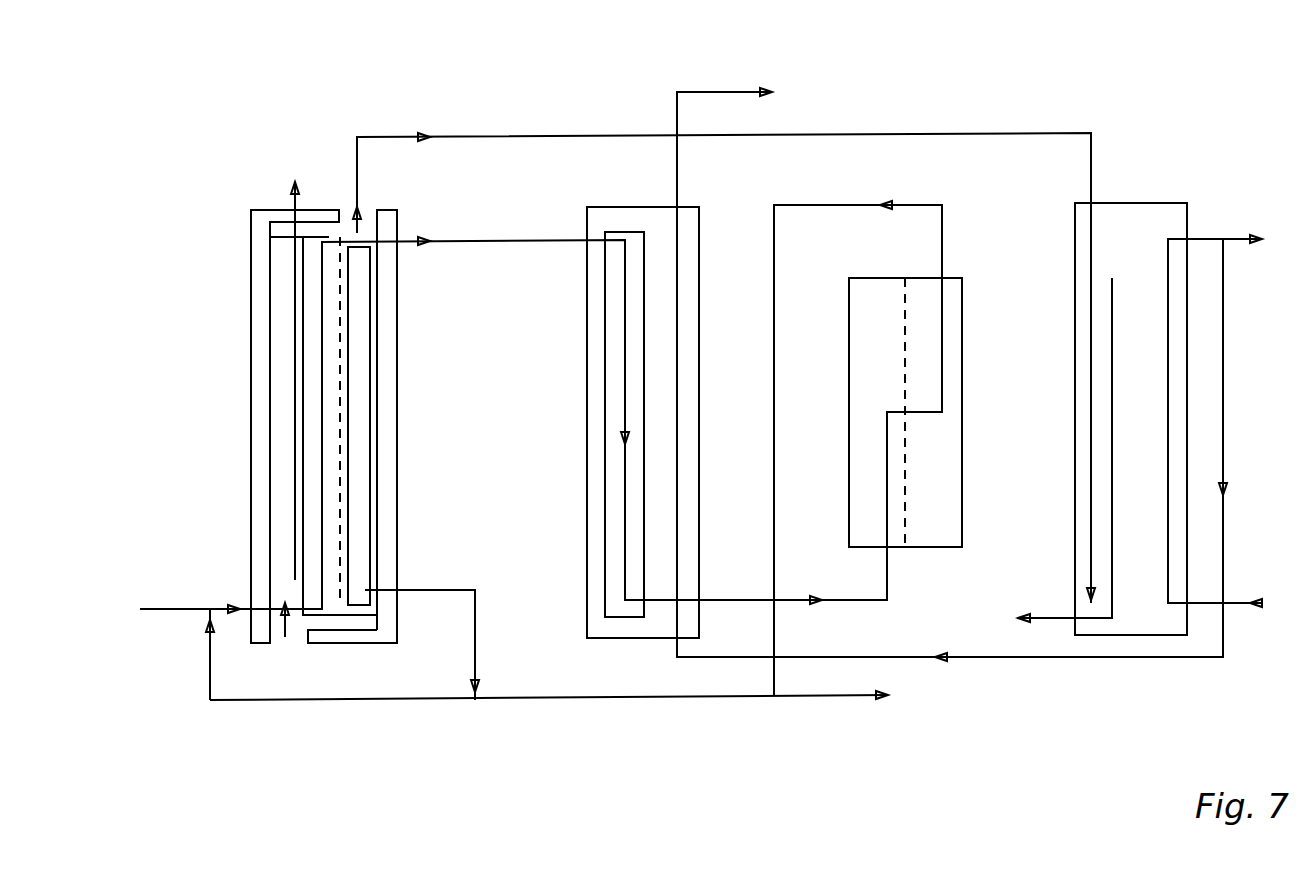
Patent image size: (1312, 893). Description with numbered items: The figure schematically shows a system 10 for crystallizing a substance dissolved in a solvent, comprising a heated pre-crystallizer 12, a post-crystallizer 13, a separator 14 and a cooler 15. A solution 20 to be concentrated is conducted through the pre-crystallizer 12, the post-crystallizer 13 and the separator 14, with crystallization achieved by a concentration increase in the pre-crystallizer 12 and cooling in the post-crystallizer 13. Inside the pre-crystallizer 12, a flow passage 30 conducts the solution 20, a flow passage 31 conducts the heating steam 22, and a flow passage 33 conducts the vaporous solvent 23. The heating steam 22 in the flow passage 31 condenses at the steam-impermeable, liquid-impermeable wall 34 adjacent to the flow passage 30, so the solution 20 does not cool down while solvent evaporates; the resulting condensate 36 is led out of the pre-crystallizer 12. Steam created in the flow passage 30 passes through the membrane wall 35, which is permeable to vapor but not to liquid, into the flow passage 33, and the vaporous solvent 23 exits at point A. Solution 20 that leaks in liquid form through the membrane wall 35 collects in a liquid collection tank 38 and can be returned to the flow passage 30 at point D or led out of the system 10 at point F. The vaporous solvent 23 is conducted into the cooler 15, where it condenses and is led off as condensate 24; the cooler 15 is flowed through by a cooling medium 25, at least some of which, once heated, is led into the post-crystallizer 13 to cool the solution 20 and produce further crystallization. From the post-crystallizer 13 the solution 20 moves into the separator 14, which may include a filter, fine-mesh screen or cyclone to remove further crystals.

The system 10 is at (222, 92).
The pre-crystallizer 12 is at (248, 241).
The post-crystallizer 13 is at (577, 352).
The separator 14 is at (849, 379).
The cooler 15 is at (1075, 372).
The solution to be concentrated 20 is at (172, 606).
The heating steam 22 is at (292, 628).
The vaporous solvent 23 is at (475, 132).
The condensate 24 is at (1044, 614).
The cooling medium 25 is at (1236, 600).
The flow passage 30 is at (315, 243).
The flow passage 31 is at (283, 342).
The flow passage 33 is at (360, 403).
The steam-impermeable and liquid-impermeable wall 34 is at (308, 580).
The membrane wall 35 is at (343, 477).
The condensate 36 is at (290, 186).
The liquid collection tank 38 is at (370, 432).